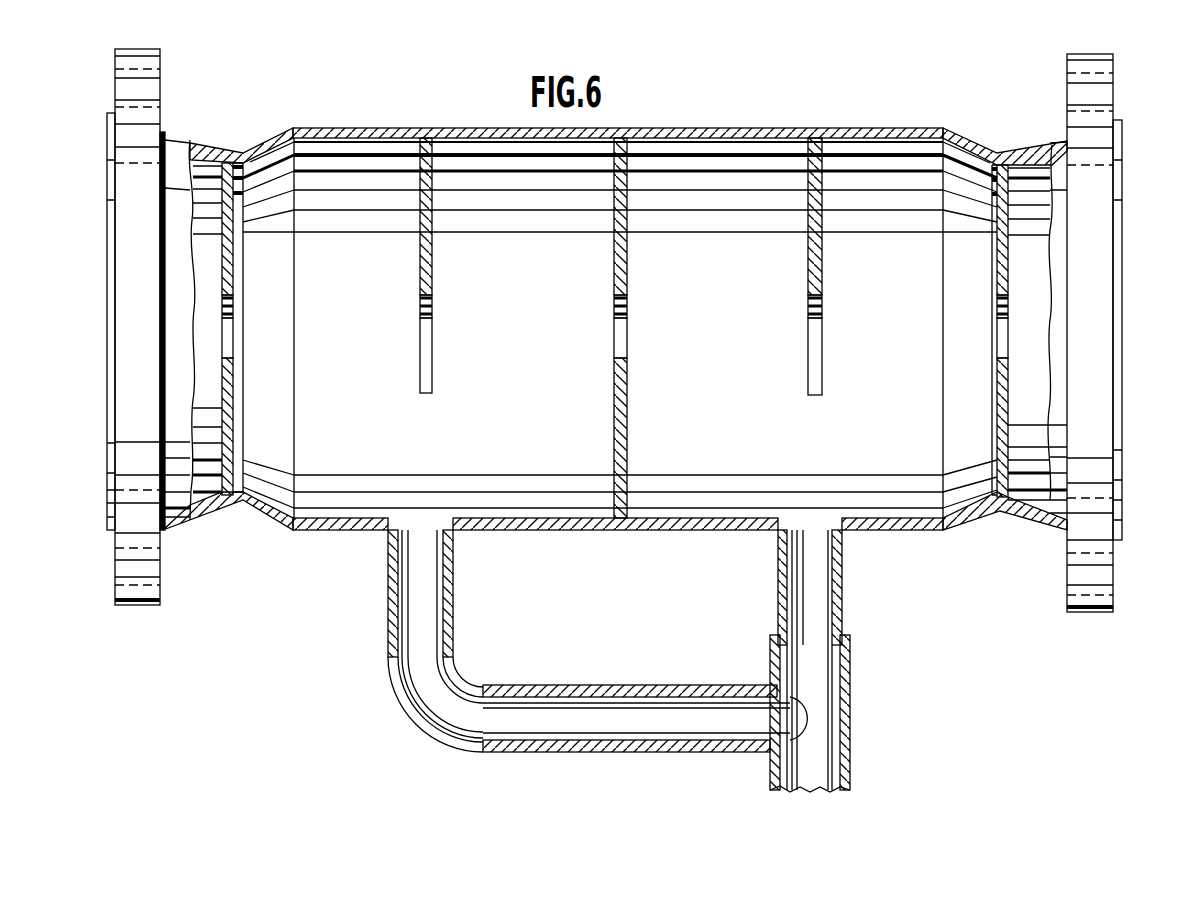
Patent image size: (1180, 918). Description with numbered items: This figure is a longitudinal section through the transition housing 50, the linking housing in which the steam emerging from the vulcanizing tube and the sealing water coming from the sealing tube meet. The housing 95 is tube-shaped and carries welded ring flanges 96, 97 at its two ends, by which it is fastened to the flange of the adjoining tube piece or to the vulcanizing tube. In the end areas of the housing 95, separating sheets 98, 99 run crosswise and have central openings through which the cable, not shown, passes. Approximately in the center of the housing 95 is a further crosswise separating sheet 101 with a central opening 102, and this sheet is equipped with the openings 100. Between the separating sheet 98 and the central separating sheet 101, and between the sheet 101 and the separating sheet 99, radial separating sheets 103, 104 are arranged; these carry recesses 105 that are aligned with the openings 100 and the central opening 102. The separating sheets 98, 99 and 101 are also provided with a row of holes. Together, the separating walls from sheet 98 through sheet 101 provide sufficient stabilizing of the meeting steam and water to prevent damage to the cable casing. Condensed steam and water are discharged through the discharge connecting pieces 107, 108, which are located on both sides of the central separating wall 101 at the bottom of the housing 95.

The transition housing 50 is at (934, 545).
The housing 95 is at (760, 128).
The ring flange 96 is at (1113, 67).
The ring flange 97 is at (150, 62).
The separating sheet 98 is at (228, 223).
The separating sheet 99 is at (997, 407).
The openings 100 is at (228, 333).
The separating sheet 101 is at (623, 226).
The central opening 102 is at (622, 333).
The radial separating sheet 103 is at (428, 226).
The radial separating sheet 104 is at (823, 226).
The recesses 105 is at (428, 336).
The discharge connecting piece 107 is at (455, 595).
The discharge connecting piece 108 is at (777, 578).